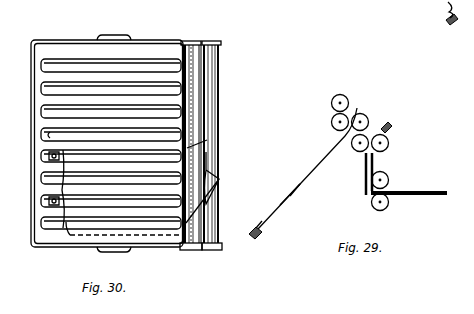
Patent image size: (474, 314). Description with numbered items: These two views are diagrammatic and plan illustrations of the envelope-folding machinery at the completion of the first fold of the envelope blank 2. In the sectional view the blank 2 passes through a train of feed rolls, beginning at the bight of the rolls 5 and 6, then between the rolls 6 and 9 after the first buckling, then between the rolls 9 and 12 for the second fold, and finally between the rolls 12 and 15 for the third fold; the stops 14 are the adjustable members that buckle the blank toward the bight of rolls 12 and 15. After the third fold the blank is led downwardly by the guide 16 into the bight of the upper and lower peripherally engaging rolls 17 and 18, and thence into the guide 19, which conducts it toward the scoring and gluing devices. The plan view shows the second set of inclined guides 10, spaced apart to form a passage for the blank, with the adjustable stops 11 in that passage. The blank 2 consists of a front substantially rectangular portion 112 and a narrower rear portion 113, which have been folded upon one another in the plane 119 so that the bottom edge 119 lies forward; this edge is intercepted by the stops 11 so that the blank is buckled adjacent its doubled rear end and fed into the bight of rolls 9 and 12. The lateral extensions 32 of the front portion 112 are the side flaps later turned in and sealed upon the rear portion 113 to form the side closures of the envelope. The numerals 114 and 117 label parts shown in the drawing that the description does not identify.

In FIG. 30, the envelope blank 2 is at (112, 222).
In FIG. 29, the envelope blank 2 is at (314, 181).
In FIG. 29, the feed roll 5 is at (341, 95).
In FIG. 30, the feed roll 6 is at (205, 78).
In FIG. 29, the feed roll 6 is at (332, 126).
In FIG. 30, the feed roll 9 is at (222, 97).
In FIG. 29, the feed roll 9 is at (368, 116).
In FIG. 30, the guide 10 is at (142, 80).
In FIG. 30, the stops 11 is at (62, 147).
In FIG. 29, the stops 11 is at (253, 240).
In FIG. 29, the feed roll 12 is at (353, 152).
In FIG. 29, the stops 14 is at (392, 124).
In FIG. 29, the feed roll 15 is at (389, 146).
In FIG. 29, the guide 16 is at (364, 186).
In FIG. 29, the roll 17 is at (389, 179).
In FIG. 29, the roll 18 is at (389, 204).
In FIG. 29, the guide 19 is at (437, 190).
In FIG. 30, the lateral extensions 32 is at (139, 236).
In FIG. 29, the front blank portion 112 is at (290, 196).
In FIG. 29, the rear blank portion 113 is at (288, 192).
In FIG. 30, the bracket 114 is at (221, 177).
In FIG. 30, the rail 117 is at (207, 140).
In FIG. 30, the fold plane (bottom edge) 119 is at (63, 228).
In FIG. 29, the fold plane (bottom edge) 119 is at (258, 226).